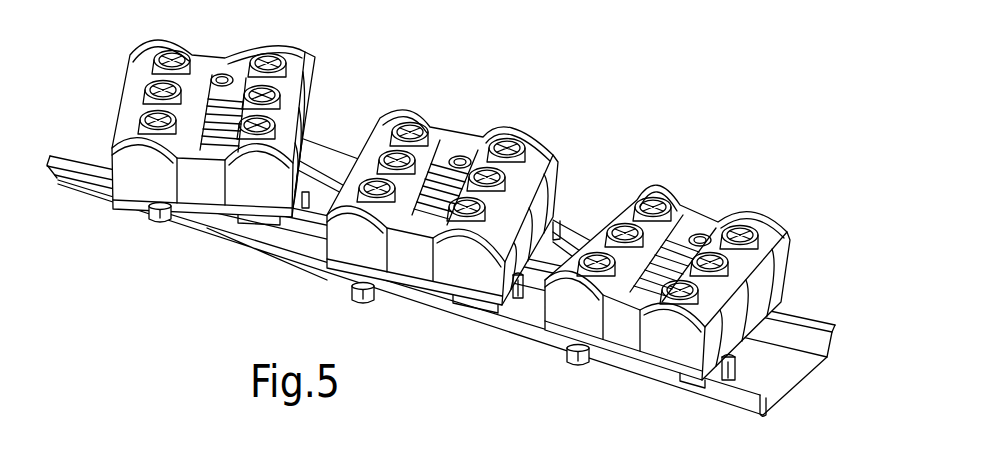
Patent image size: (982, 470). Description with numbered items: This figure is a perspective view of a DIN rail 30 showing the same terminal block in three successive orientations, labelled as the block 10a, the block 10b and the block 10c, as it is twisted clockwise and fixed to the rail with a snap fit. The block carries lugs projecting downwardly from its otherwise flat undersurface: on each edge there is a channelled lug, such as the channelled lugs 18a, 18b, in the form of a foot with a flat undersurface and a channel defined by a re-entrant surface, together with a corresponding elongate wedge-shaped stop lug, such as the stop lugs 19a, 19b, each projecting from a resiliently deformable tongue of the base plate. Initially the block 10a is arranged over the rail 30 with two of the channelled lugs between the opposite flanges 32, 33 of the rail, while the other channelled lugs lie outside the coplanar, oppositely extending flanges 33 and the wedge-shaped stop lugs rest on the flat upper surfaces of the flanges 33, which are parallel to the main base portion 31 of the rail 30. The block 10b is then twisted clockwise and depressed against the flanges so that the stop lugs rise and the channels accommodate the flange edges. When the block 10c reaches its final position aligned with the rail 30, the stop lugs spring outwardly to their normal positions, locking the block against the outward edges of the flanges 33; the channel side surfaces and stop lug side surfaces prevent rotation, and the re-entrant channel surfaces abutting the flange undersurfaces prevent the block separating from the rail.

The block in initial position 10a is at (311, 55).
The block in intermediate position 10b is at (557, 141).
The block in final position 10c is at (787, 224).
The channelled lug 18a is at (150, 222).
The channelled lug 18b is at (518, 299).
The stop lug 19a is at (256, 224).
The stop lug 19b is at (561, 240).
The DIN rail 30 is at (457, 305).
The rail web 31 is at (786, 411).
The flange 32 is at (812, 343).
The flange 33 is at (813, 322).